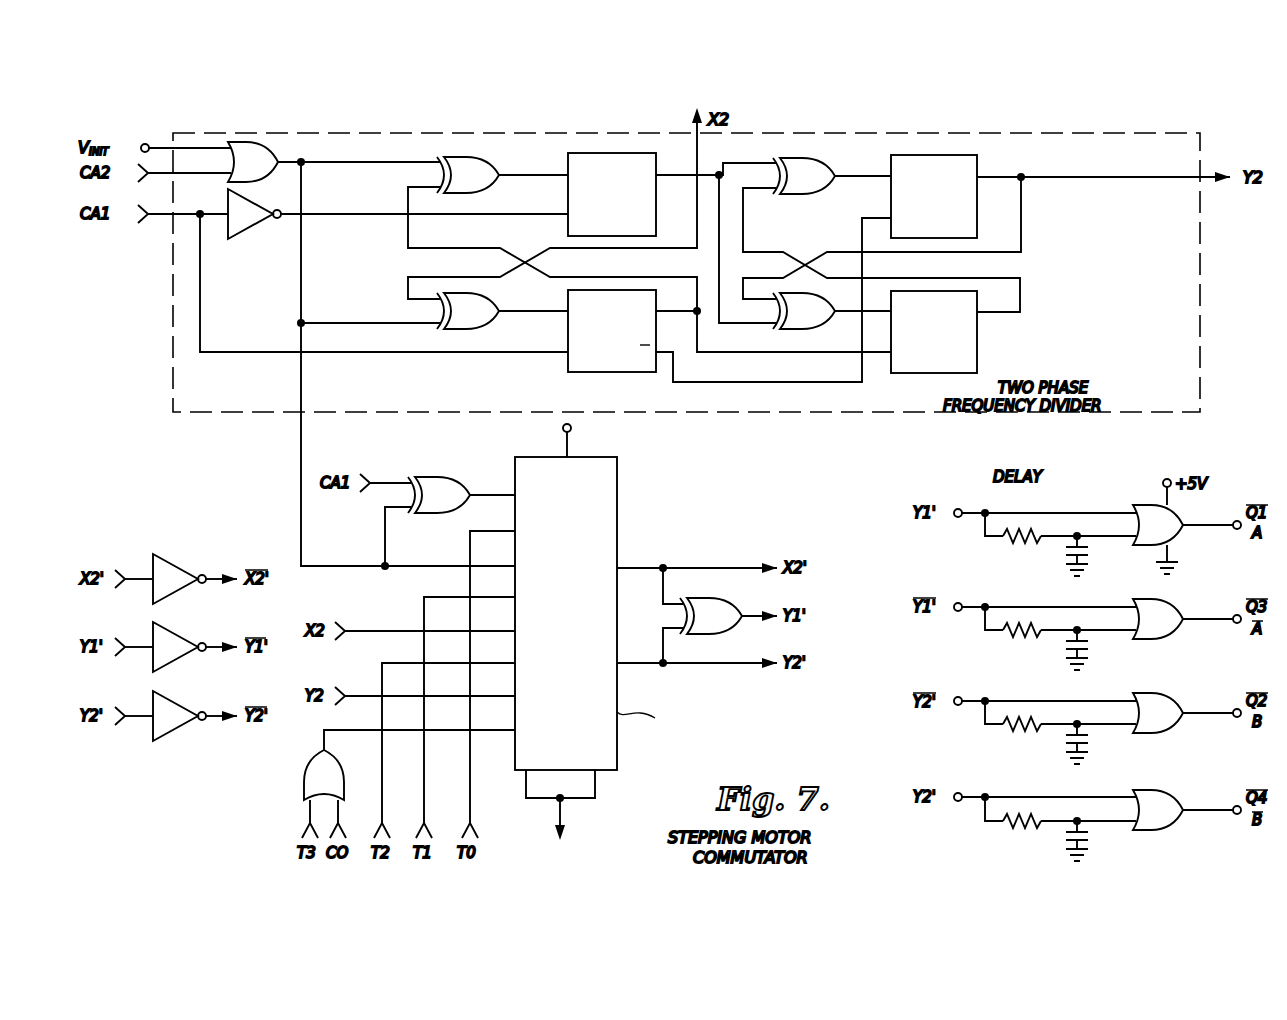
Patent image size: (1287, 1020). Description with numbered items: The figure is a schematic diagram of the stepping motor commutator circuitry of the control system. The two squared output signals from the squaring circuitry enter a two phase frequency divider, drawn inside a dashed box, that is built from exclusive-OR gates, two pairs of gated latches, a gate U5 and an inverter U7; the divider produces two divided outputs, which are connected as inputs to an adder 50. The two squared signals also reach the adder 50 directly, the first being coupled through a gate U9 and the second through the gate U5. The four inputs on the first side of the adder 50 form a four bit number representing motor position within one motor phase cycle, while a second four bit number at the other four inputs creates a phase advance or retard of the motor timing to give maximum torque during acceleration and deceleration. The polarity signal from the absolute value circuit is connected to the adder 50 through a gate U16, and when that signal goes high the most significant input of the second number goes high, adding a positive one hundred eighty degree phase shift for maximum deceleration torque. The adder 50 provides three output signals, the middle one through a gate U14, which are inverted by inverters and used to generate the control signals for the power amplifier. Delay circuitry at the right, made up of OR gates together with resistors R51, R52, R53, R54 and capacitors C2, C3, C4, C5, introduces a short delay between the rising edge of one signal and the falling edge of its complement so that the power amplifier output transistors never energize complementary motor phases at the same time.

The adder 50 is at (617, 482).
The gate U5 is at (253, 162).
The inverter U7 is at (254, 214).
The gate U9 is at (439, 495).
The gate U14 is at (711, 616).
The gate U16 is at (324, 775).
The resistor R51 is at (1022, 543).
The resistor R52 is at (1022, 637).
The resistor R53 is at (1022, 731).
The resistor R54 is at (1022, 828).
The capacitor C2 is at (1088, 550).
The capacitor C3 is at (1088, 644).
The capacitor C4 is at (1088, 738).
The capacitor C5 is at (1088, 835).